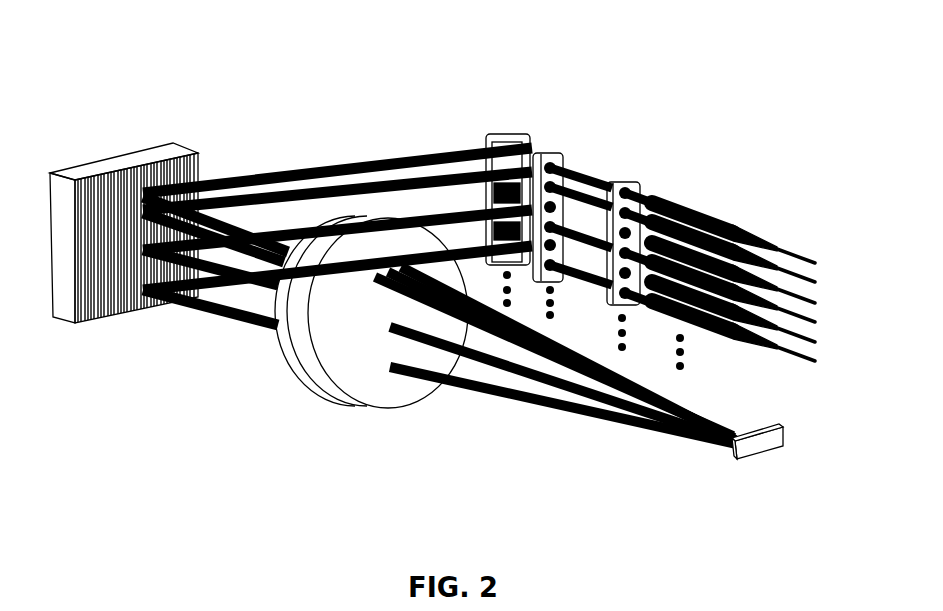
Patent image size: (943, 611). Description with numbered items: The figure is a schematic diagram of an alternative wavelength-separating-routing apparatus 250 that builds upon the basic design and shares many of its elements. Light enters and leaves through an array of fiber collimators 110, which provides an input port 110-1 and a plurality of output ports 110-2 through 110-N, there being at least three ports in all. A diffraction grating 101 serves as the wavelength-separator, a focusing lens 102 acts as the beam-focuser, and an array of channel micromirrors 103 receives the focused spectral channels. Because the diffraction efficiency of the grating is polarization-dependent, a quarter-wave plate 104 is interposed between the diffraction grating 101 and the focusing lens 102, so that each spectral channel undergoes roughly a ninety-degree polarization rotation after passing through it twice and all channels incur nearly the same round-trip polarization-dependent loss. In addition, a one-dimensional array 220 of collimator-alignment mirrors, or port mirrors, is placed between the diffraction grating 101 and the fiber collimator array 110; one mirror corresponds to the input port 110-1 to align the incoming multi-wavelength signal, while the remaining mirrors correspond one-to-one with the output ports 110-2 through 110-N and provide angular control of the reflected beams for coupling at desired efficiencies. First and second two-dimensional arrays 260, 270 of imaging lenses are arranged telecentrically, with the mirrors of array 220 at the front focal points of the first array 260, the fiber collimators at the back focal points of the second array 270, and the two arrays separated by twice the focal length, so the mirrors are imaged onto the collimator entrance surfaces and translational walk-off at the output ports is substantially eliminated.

The WSR apparatus 250 is at (128, 80).
The diffraction grating 101 is at (185, 143).
The one-dimensional array of collimator-alignment mirrors 220 is at (478, 128).
The first two-dimensional array of imaging lenses 260 is at (563, 153).
The second two-dimensional array of imaging lenses 270 is at (635, 183).
The array of fiber collimators 110 is at (675, 190).
The input port 110-1 is at (693, 207).
The output port 110-2 is at (750, 237).
The output port 110-N is at (683, 366).
The focusing lens 102 is at (327, 390).
The quarter-wave plate 104 is at (287, 357).
The array of channel micromirrors 103 is at (765, 453).